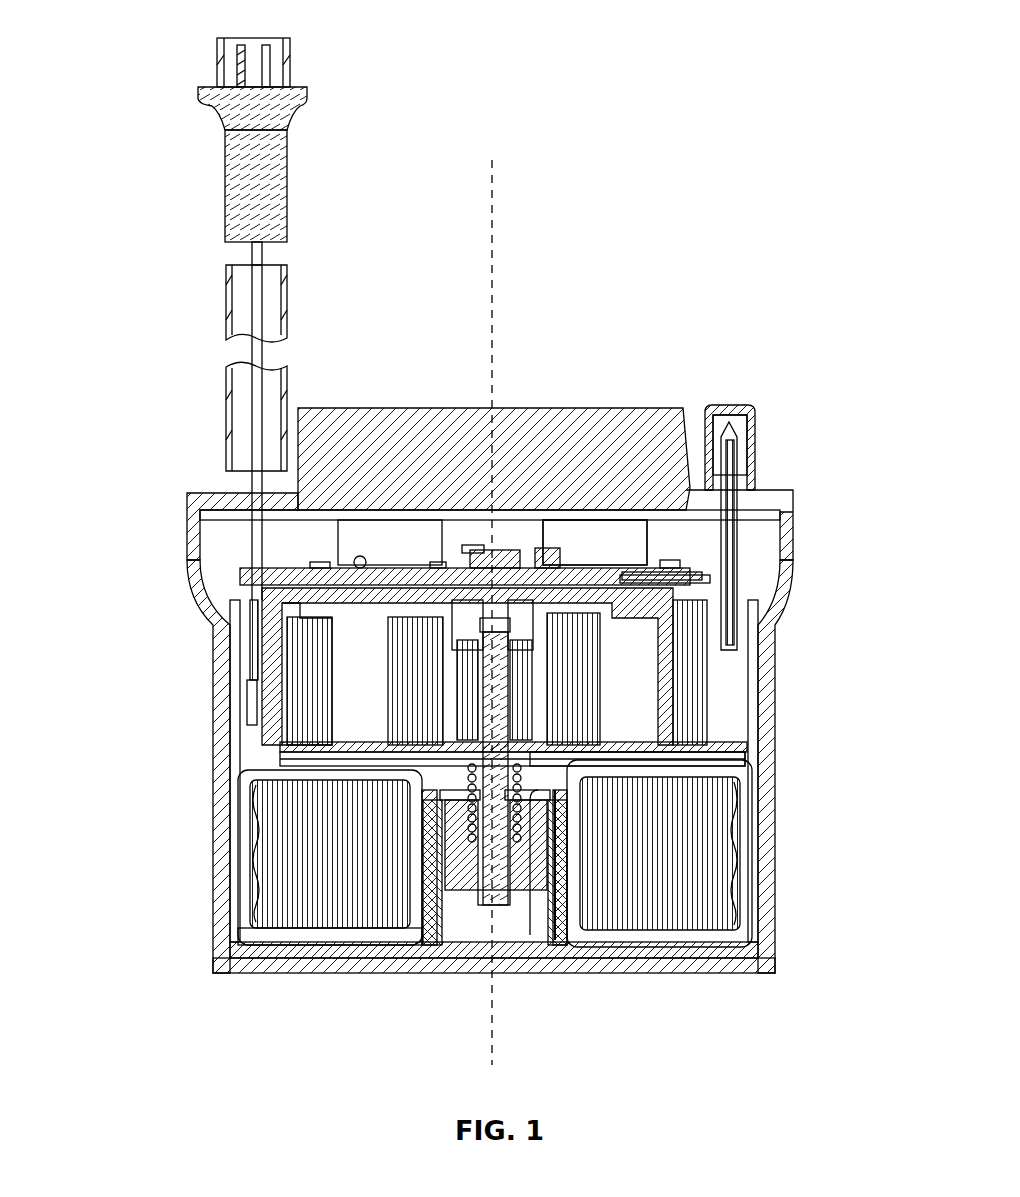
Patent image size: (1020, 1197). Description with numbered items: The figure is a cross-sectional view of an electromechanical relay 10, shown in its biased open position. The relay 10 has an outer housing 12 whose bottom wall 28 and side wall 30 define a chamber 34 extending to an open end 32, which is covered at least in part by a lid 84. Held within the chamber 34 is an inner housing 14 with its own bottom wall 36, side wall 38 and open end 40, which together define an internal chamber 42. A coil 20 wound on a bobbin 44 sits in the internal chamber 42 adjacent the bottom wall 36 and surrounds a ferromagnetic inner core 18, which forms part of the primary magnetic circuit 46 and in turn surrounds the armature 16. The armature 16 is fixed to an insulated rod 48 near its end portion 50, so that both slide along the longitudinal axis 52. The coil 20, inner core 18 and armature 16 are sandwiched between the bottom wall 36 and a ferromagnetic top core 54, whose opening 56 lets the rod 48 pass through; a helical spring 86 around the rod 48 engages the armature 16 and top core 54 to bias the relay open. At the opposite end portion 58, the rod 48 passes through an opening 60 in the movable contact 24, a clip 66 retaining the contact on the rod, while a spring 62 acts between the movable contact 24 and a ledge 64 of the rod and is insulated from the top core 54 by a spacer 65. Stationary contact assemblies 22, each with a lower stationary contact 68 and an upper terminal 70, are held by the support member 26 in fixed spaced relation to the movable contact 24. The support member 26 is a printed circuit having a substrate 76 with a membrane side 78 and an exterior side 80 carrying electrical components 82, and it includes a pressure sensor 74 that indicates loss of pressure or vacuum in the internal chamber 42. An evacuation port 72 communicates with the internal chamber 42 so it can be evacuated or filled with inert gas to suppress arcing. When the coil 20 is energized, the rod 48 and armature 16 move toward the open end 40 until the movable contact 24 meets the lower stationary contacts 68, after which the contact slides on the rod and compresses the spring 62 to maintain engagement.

The electromechanical relay 10 is at (785, 202).
The outer housing 12 is at (473, 748).
The inner housing 14 is at (228, 907).
The armature 16 is at (455, 895).
The inner core 18 is at (540, 920).
The coil 20 is at (708, 913).
The stationary contact assembly 22 is at (570, 528).
The movable contact 24 is at (262, 690).
The support member 26 is at (300, 590).
The bottom wall 28 is at (222, 975).
The side wall 30 is at (213, 960).
The open end 32 is at (763, 500).
The chamber 34 is at (765, 590).
The bottom wall 36 is at (350, 960).
The side wall 38 is at (238, 922).
The open end 40 is at (272, 572).
The internal chamber 42 is at (378, 690).
The bobbin 44 is at (650, 935).
The primary magnetic circuit 46 is at (757, 790).
The insulated rod 48 is at (492, 908).
The end portion 50 is at (510, 912).
The longitudinal axis 52 is at (492, 192).
The top core 54 is at (296, 758).
The opening 56 is at (636, 740).
The end portion 58 is at (500, 625).
The opening 60 is at (478, 548).
The spring 62 is at (470, 760).
The ledge 64 is at (470, 840).
The spacer 65 is at (648, 758).
The clip 66 is at (512, 640).
The lower stationary contact 68 is at (392, 597).
The upper terminal 70 is at (390, 528).
The evacuation port 72 is at (750, 403).
The pressure sensor 74 is at (687, 567).
The substrate 76 is at (305, 580).
The membrane side 78 is at (362, 660).
The exterior side 80 is at (330, 562).
The electrical components 82 is at (493, 618).
The lid 84 is at (684, 486).
The helical spring 86 is at (212, 186).